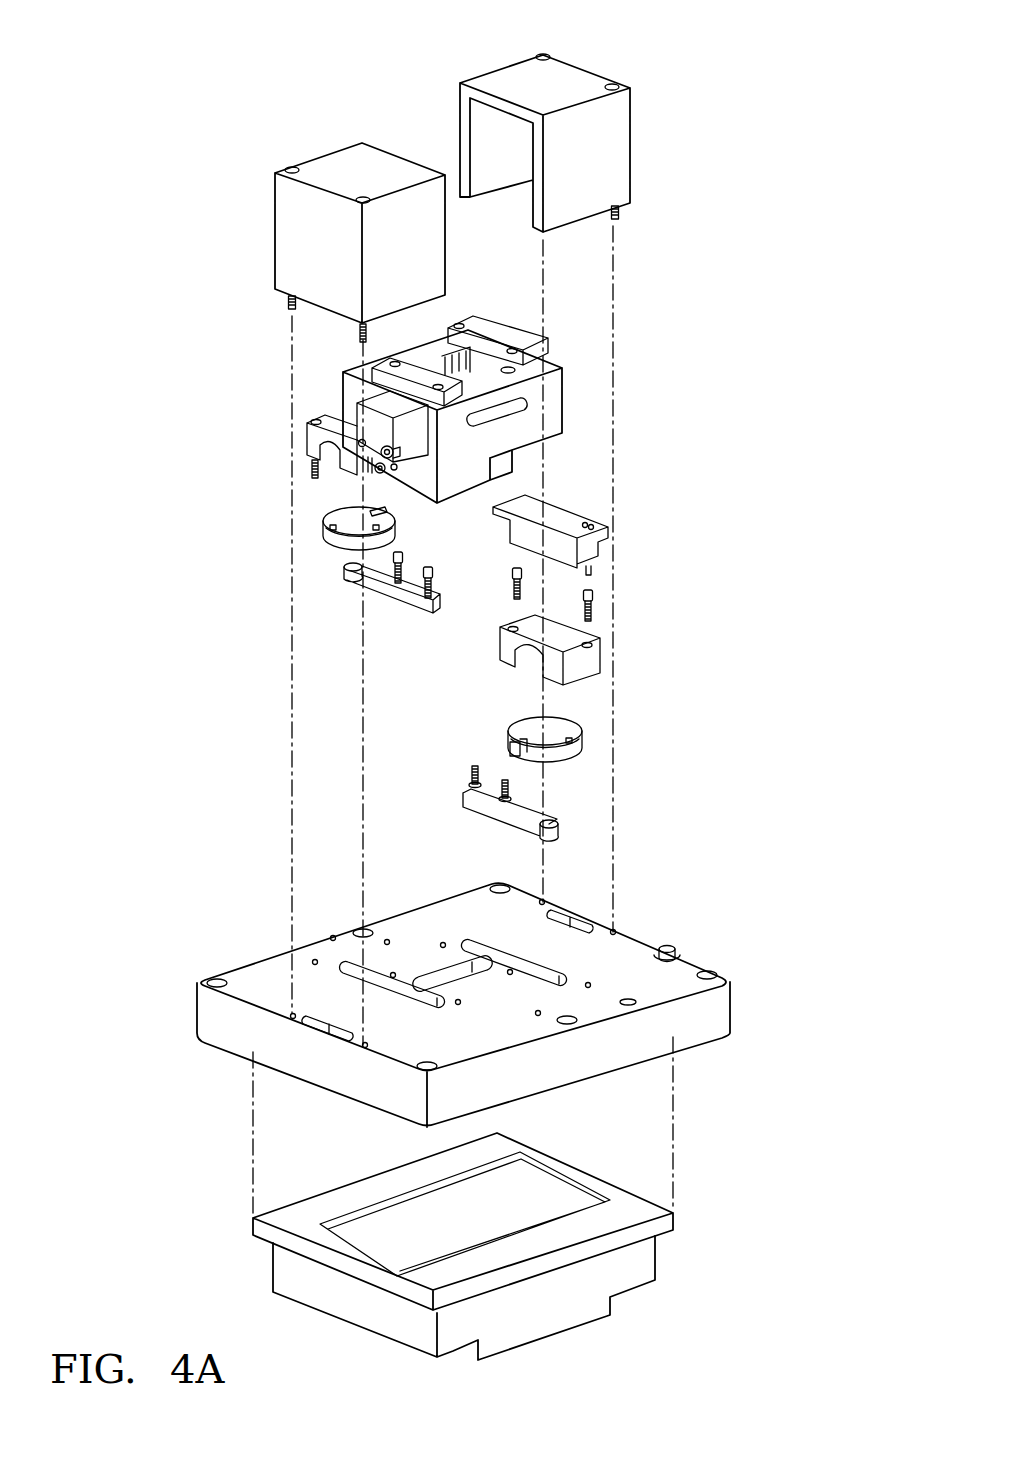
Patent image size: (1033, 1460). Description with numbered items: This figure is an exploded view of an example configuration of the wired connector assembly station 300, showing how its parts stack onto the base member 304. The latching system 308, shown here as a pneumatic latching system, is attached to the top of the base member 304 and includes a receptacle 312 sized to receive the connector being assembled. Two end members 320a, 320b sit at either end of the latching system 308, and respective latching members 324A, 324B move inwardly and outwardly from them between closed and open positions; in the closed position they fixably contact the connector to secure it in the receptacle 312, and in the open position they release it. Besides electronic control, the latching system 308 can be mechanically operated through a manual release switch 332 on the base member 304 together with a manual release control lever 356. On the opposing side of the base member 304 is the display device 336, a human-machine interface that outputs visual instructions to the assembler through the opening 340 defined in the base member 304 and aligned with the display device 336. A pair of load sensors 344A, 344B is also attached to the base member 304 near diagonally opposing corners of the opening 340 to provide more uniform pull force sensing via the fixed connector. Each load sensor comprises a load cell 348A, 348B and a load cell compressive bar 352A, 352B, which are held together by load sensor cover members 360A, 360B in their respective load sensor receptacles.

The assembly station 300 is at (204, 49).
The base member 304 is at (680, 1025).
The latching system 308 is at (683, 338).
The receptacle 312 is at (440, 367).
The end member 320a is at (330, 165).
The end member 320b is at (583, 75).
The latching member 324A is at (408, 377).
The latching member 324B is at (497, 335).
The manual release switch 332 is at (678, 948).
The display device 336 is at (563, 1305).
The opening 340 is at (442, 980).
The load sensor 344A is at (263, 601).
The load sensor 344B is at (596, 774).
The load cell 348A is at (332, 540).
The load cell 348B is at (565, 718).
The load cell compressive bar 352A is at (415, 605).
The load cell compressive bar 352B is at (560, 830).
The manual release control lever 356 is at (600, 522).
The load sensor cover member 360A is at (310, 445).
The load sensor cover member 360B is at (592, 645).